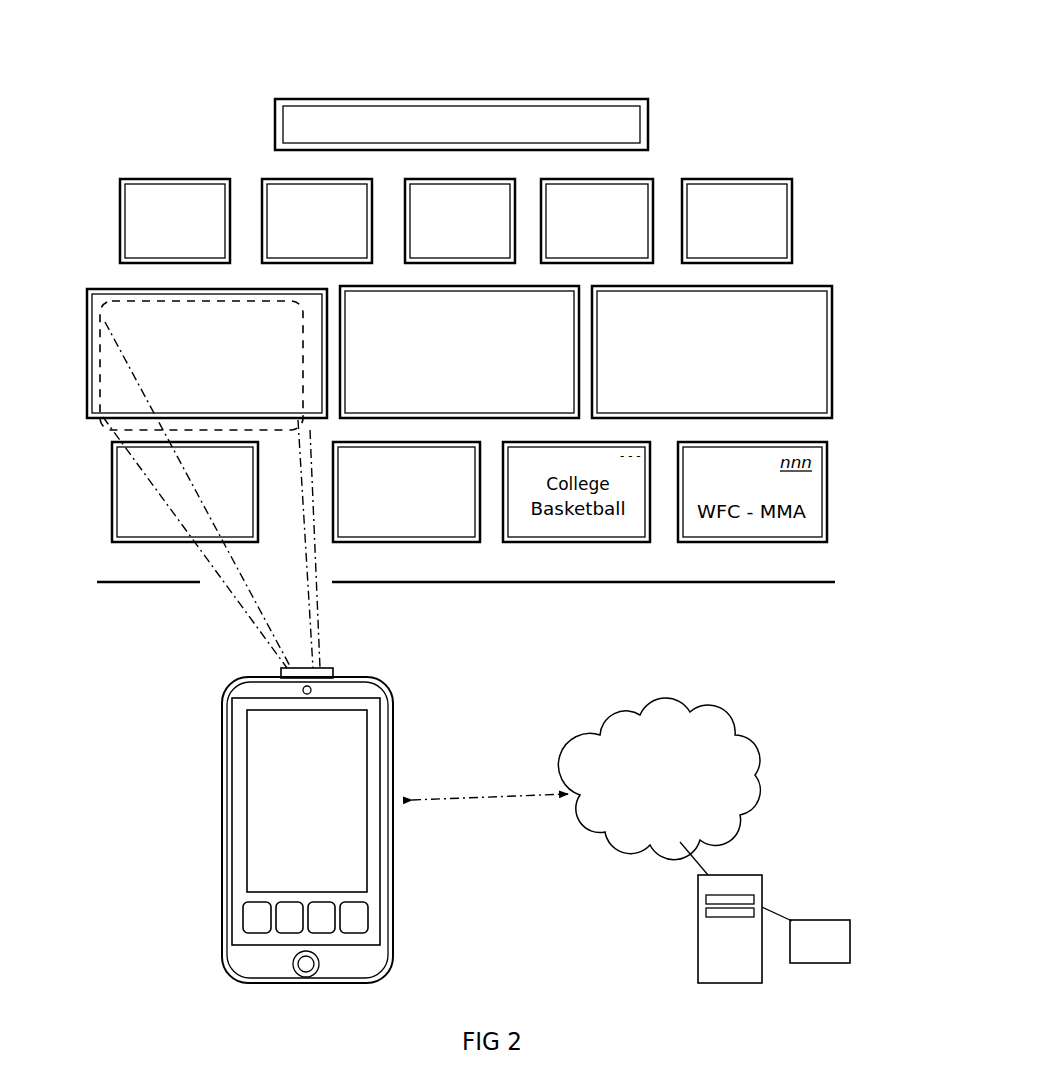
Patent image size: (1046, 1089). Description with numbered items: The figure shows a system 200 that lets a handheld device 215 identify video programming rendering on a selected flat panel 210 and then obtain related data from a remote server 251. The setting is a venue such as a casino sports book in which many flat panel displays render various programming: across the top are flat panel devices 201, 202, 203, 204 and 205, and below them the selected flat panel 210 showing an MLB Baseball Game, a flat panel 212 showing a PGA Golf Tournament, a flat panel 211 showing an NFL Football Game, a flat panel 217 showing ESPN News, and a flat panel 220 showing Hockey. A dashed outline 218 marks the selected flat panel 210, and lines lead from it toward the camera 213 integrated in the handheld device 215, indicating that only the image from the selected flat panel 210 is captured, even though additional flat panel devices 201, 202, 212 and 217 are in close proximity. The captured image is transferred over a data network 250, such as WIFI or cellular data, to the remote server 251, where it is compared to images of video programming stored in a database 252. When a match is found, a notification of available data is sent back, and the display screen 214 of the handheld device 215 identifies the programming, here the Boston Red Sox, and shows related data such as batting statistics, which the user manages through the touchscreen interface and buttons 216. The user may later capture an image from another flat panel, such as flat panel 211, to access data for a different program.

The system 200 is at (754, 92).
The additional flat panel device 201 is at (210, 206).
The additional flat panel device 202 is at (355, 206).
The event selection icon 203 is at (498, 206).
The horse races icon 204 is at (640, 203).
The event selection icon 205 is at (780, 206).
The selected flat panel 210 is at (88, 396).
The flat panel 211 is at (812, 318).
The additional flat panel device 212 is at (557, 318).
The camera 213 is at (335, 670).
The display screen 214 is at (358, 785).
The handheld device 215 is at (222, 768).
The mobile device buttons 216 is at (246, 915).
The additional flat panel device 217 is at (240, 471).
The selection highlight 218 is at (118, 302).
The hockey selection 220 is at (463, 470).
The data network 250 is at (704, 748).
The remote server 251 is at (762, 877).
The database 252 is at (845, 926).